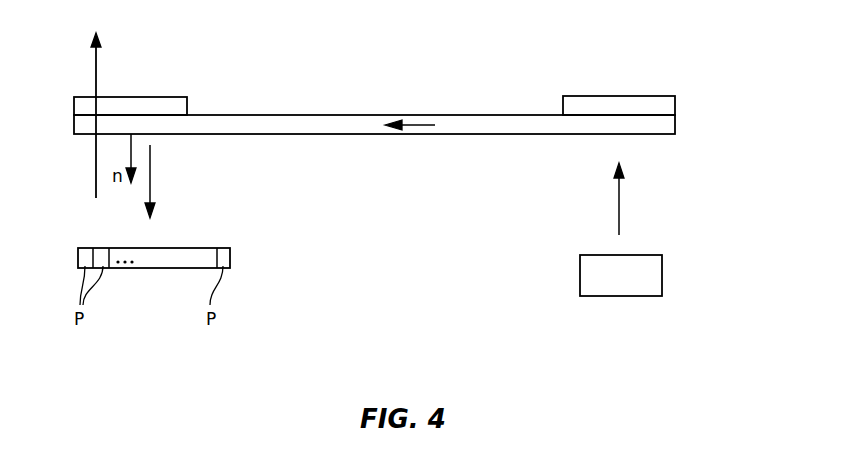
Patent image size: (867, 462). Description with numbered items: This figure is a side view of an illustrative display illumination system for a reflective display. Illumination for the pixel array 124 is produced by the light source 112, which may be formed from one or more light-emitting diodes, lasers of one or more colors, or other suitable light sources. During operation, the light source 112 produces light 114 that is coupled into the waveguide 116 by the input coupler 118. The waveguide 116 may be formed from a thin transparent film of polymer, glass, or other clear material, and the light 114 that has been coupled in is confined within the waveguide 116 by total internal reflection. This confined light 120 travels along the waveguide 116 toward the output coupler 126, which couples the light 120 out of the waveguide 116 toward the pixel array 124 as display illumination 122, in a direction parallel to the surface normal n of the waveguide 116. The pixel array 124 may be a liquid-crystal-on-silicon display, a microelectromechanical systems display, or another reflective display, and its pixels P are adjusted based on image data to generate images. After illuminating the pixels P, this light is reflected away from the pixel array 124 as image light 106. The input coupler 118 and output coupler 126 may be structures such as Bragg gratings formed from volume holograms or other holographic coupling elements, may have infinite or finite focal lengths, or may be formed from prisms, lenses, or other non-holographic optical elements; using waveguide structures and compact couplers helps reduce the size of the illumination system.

The image light 106 is at (96, 73).
The light source 112 is at (662, 273).
The light 114 is at (619, 197).
The waveguide 116 is at (675, 125).
The input coupler 118 is at (645, 96).
The light 120 is at (413, 134).
The display illumination 122 is at (150, 178).
The pixel array 124 is at (230, 258).
The output coupler 126 is at (147, 97).